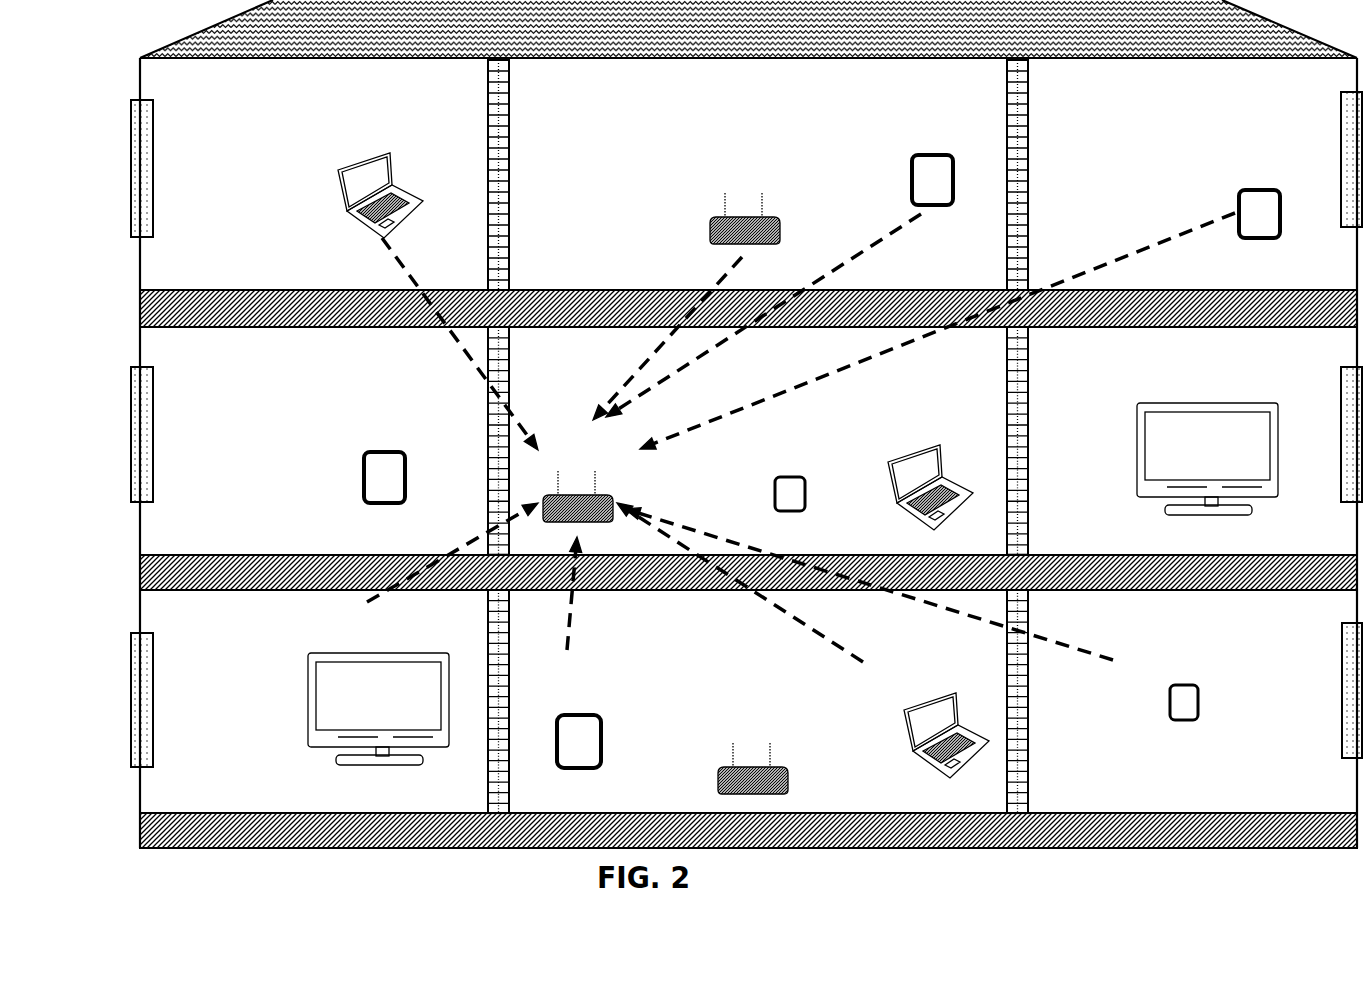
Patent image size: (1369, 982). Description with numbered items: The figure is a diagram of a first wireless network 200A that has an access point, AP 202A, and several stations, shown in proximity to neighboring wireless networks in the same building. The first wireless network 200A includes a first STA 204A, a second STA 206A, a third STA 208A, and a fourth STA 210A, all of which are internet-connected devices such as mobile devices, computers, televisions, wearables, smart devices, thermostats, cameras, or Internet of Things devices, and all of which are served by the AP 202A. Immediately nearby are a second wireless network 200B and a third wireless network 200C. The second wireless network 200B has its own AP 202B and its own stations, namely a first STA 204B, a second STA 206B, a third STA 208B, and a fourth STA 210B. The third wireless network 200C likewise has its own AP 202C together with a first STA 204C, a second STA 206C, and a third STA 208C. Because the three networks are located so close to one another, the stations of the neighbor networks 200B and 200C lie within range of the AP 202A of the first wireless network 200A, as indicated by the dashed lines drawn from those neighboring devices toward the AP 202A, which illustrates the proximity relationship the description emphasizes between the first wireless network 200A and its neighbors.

The first wireless network 200A is at (122, 327).
The second wireless network 200B is at (122, 583).
The third wireless network 200C is at (122, 58).
The AP 202A is at (583, 478).
The AP 202B is at (757, 743).
The AP 202C is at (689, 289).
The first STA 204A is at (371, 454).
The first STA 204B is at (423, 634).
The first STA 204C is at (392, 292).
The second STA 206A is at (776, 474).
The second STA 206B is at (567, 652).
The second STA 206C is at (779, 262).
The third STA 208A is at (922, 467).
The third STA 208B is at (803, 640).
The third STA 208C is at (960, 293).
The fourth STA 210A is at (1207, 443).
The fourth STA 210B is at (915, 614).